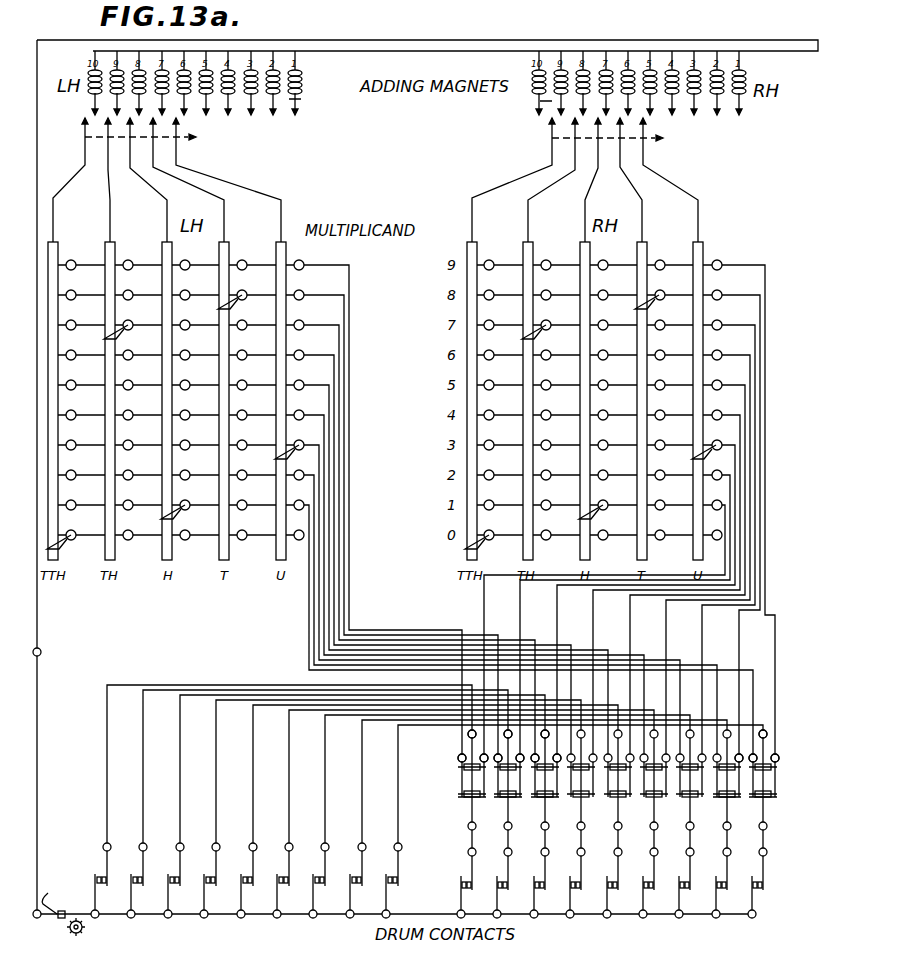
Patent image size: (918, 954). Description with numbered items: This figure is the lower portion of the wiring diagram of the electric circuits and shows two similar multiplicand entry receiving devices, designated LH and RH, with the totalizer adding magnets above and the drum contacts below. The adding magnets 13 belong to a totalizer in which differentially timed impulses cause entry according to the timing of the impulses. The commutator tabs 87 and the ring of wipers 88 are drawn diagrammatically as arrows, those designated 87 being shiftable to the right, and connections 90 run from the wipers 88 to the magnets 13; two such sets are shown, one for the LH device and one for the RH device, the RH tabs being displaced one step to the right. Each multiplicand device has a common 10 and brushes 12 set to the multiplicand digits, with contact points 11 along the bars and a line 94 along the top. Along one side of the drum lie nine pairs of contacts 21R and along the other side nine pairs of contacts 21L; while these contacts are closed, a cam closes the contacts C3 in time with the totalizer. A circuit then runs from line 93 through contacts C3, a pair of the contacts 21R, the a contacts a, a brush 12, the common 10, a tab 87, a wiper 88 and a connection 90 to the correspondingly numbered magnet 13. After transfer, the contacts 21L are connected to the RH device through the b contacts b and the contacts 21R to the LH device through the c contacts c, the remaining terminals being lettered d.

The adding magnets 13 is at (301, 88).
The connections 90 is at (300, 99).
The wipers 88 is at (251, 120).
The tabs 87 is at (108, 120).
The common bus line 94 is at (815, 47).
The common 10 is at (107, 252).
The multiplicand contact points 11 is at (411, 486).
The brush 12 is at (120, 337).
The line 93 is at (41, 651).
The contacts C3 is at (59, 905).
The contacts 21L is at (237, 893).
The contacts 21R is at (647, 890).
The a contacts a is at (485, 797).
The b contacts b is at (468, 737).
The c contacts c is at (462, 798).
The contact terminal d is at (460, 757).